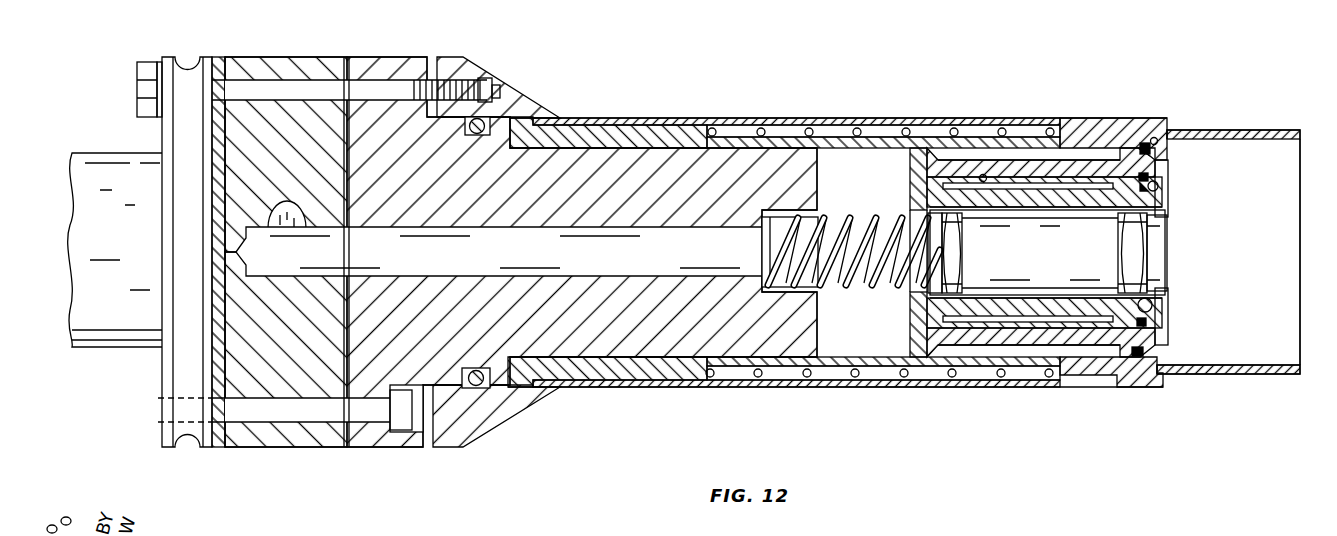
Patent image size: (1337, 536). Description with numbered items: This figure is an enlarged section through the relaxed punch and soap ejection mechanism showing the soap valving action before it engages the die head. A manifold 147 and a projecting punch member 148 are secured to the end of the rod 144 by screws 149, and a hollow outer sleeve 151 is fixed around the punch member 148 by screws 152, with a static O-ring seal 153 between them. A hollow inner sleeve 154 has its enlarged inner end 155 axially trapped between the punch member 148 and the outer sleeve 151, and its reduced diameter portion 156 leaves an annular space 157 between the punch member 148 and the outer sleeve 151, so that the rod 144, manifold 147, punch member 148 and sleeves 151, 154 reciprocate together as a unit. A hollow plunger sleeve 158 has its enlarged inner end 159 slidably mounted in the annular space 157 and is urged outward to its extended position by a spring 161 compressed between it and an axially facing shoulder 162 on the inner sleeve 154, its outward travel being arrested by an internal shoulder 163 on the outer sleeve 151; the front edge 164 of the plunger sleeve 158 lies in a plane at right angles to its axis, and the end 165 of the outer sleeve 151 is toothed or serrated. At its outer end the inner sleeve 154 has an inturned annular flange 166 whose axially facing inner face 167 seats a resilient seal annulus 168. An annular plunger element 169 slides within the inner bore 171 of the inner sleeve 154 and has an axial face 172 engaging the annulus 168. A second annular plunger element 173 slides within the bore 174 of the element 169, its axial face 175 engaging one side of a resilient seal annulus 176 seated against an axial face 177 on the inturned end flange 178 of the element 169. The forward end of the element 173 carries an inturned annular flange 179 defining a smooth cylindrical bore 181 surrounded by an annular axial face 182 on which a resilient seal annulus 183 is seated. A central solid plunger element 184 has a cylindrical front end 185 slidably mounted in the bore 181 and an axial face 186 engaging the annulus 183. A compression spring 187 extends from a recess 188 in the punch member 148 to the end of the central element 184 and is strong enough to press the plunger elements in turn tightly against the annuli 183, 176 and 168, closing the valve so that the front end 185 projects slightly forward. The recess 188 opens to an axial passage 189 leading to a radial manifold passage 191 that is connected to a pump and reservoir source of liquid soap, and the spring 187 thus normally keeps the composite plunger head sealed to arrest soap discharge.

The rod 144 is at (110, 337).
The manifold 147 is at (310, 62).
The projecting punch member 148 is at (407, 75).
The screws 149 is at (371, 419).
The hollow outer sleeve 151 is at (587, 120).
The screws 152 is at (372, 92).
The static O-ring seal 153 is at (481, 386).
The hollow inner sleeve 154 is at (677, 127).
The enlarged inner end 155 is at (522, 120).
The reduced diameter portion 156 is at (777, 143).
The annular space 157 is at (835, 130).
The hollow plunger sleeve 158 is at (1247, 138).
The enlarged inner end 159 is at (1077, 128).
The spring 161 is at (880, 120).
The axially facing shoulder 162 is at (716, 130).
The internal shoulder 163 is at (1133, 123).
The front edge 164 is at (1300, 364).
The end of outer sleeve 165 is at (1155, 143).
The inturned annular flange 166 is at (1152, 152).
The axially facing inner face 167 is at (1140, 148).
The resilient seal annulus 168 is at (1145, 351).
The annular plunger element 169 is at (1018, 160).
The inner bore 171 is at (1018, 352).
The axial face 172 is at (1147, 330).
The second annular plunger element 173 is at (1001, 208).
The bore 174 is at (983, 174).
The axial face 175 is at (1130, 186).
The resilient seal annulus 176 is at (1150, 189).
The axial face 177 is at (1148, 177).
The inturned end flange 178 is at (1158, 184).
The inturned annular flange 179 is at (1168, 212).
The cylindrical bore 181 is at (1155, 266).
The annular axial face 182 is at (1152, 304).
The resilient seal annulus 183 is at (1152, 224).
The central solid plunger element 184 is at (1060, 273).
The cylindrical front end 185 is at (1160, 250).
The axial face 186 is at (1148, 254).
The compression spring 187 is at (867, 220).
The recess 188 is at (819, 230).
The axial passage 189 is at (667, 236).
The radial manifold passage 191 is at (292, 220).